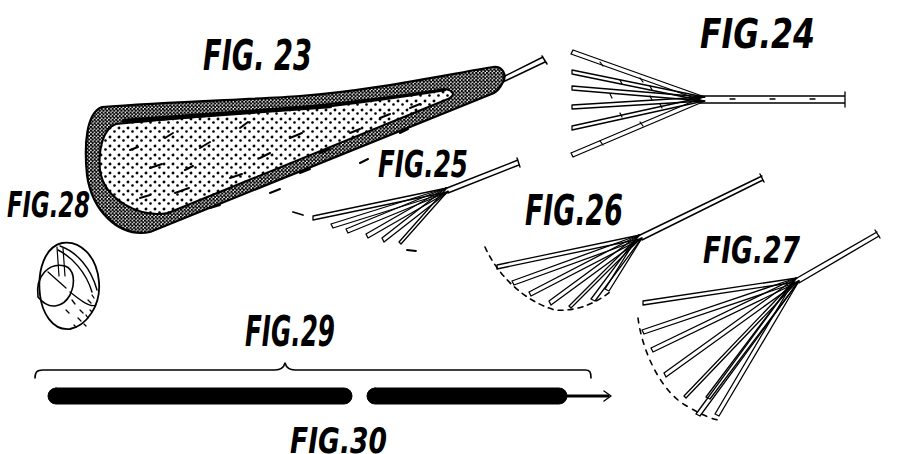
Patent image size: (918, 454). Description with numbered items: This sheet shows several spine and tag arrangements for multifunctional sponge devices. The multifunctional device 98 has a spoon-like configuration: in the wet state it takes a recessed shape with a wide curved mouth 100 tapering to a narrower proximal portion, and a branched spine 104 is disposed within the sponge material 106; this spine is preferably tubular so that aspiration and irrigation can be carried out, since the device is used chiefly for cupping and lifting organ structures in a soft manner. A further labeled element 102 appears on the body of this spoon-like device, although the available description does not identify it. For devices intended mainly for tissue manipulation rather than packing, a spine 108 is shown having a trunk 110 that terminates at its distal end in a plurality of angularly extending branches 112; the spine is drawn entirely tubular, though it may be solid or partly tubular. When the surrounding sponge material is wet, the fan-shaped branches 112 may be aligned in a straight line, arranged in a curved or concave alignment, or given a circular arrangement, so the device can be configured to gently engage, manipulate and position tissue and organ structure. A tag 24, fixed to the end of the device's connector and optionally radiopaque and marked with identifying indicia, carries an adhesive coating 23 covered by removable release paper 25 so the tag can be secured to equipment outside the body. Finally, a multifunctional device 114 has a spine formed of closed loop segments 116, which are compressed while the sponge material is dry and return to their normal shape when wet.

In FIG. 23, the multifunctional device 98 is at (330, 91).
In FIG. 23, the wide curved mouth 100 is at (90, 182).
In FIG. 23, the sheath wall 102 is at (385, 100).
In FIG. 23, the branched spine 104 is at (177, 100).
In FIG. 23, the sponge material 106 is at (227, 210).
In FIG. 24, the spine 108 is at (693, 84).
In FIG. 25, the spine 108 is at (406, 204).
In FIG. 26, the spine 108 is at (624, 242).
In FIG. 27, the spine 108 is at (759, 325).
In FIG. 24, the trunk 110 is at (771, 106).
In FIG. 24, the branches 112 is at (569, 131).
In FIG. 29, the multifunctional device 114 is at (497, 405).
In FIG. 29, the closed loop segments 116 is at (500, 385).
In FIG. 28, the adhesive coating 23 is at (93, 319).
In FIG. 28, the tag 24 is at (96, 274).
In FIG. 28, the release paper 25 is at (47, 299).